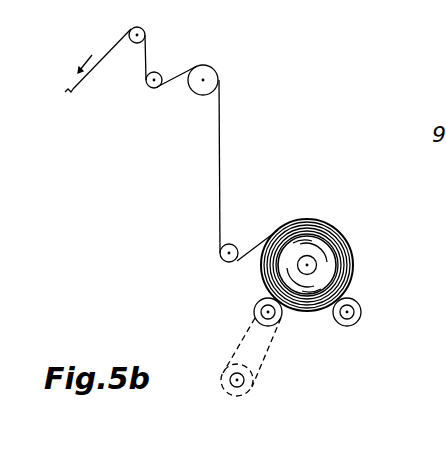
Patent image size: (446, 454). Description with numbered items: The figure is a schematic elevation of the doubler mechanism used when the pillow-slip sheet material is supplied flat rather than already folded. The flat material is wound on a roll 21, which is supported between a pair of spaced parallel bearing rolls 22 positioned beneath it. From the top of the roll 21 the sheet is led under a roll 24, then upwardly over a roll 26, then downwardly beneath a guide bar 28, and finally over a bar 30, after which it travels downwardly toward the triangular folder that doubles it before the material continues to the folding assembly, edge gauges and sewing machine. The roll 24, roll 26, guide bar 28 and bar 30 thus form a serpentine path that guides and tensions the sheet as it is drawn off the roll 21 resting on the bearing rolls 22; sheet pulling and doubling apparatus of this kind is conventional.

The roll 21 is at (323, 262).
The bearing rolls 22 is at (254, 307).
The roll 24 is at (235, 244).
The roll 26 is at (217, 72).
The guide bar 28 is at (162, 72).
The bar 30 is at (145, 25).